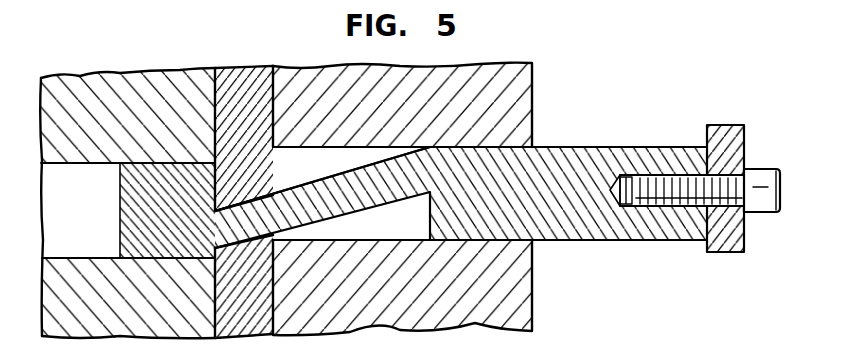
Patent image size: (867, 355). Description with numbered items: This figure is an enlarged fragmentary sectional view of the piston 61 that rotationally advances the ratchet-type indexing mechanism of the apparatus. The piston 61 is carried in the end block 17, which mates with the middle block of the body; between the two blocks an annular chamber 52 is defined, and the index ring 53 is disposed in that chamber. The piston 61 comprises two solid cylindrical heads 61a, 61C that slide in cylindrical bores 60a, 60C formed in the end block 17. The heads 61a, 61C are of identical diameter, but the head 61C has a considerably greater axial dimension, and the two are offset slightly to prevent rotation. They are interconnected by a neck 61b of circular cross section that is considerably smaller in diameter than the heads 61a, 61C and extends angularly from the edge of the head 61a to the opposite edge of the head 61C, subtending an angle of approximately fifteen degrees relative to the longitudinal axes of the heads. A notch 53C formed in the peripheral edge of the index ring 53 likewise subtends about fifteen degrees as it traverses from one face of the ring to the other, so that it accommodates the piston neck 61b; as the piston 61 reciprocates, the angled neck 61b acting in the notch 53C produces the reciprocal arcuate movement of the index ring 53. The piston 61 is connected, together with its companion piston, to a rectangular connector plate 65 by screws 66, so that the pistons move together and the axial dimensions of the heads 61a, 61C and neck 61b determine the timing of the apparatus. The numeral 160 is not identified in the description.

The die block 160 is at (122, 66).
The index ring 53 is at (233, 70).
The annular chamber 52 is at (268, 73).
The end block 17 is at (530, 60).
The piston 61 is at (566, 144).
The cylindrical head 61C is at (596, 153).
The rectangular connector plate 65 is at (712, 142).
The screws 66 is at (761, 168).
The notch 53C is at (237, 207).
The neck 61b is at (352, 182).
The cylindrical bore 60C is at (404, 233).
The cylindrical head 61a is at (132, 191).
The cylindrical bore 60a is at (102, 243).